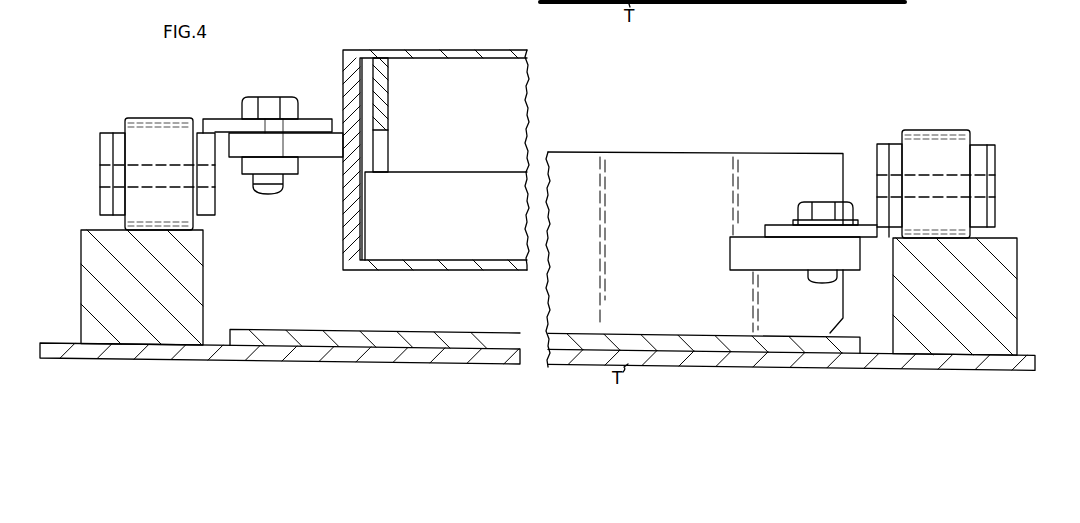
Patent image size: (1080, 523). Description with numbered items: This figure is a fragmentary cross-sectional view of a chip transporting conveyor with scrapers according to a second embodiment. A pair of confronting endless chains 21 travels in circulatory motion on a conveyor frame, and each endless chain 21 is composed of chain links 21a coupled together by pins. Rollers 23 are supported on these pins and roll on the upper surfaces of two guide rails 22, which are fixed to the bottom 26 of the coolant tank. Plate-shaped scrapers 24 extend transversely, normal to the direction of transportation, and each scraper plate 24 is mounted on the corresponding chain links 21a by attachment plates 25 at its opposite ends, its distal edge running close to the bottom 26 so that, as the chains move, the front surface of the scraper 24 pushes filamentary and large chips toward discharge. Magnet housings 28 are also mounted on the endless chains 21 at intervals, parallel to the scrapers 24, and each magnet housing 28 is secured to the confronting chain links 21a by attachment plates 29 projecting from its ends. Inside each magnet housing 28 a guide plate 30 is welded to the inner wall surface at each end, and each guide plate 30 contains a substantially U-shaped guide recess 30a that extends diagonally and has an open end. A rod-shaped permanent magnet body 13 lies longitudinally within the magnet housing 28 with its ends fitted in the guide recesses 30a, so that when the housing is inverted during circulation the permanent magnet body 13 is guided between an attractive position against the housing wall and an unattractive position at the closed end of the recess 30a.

The permanent magnet body 13 is at (400, 163).
The endless chain 21 is at (100, 203).
The chain link 21a is at (205, 202).
The guide rail 22 is at (84, 282).
The roller 23 is at (166, 118).
The scraper plate 24 is at (664, 153).
The attachment plate 25 is at (775, 272).
The bottom of coolant tank 26 is at (618, 333).
The magnet housing 28 is at (348, 50).
The attachment plate 29 is at (317, 150).
The guide plate 30 is at (388, 80).
The guide recess 30a is at (388, 130).